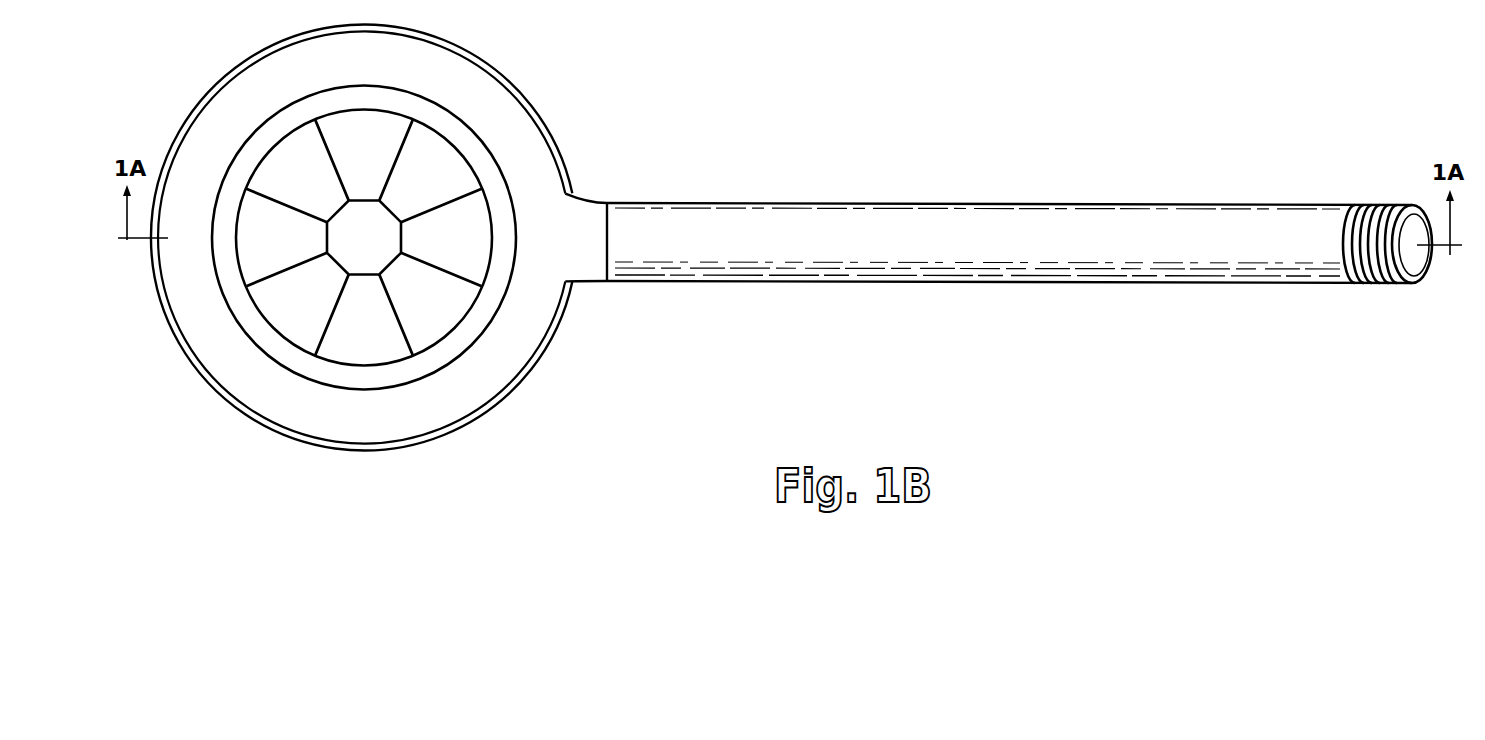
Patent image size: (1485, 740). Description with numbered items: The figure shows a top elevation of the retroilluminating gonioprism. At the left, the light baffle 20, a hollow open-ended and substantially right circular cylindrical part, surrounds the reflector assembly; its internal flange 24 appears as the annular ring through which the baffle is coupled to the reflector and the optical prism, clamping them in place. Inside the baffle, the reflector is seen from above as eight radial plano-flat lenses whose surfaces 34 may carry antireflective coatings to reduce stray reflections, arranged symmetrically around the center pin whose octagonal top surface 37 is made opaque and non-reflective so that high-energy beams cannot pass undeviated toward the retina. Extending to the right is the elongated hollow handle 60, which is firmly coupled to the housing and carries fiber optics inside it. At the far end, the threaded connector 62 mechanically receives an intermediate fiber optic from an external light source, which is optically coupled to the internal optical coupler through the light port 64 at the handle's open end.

The light baffle 20 is at (198, 115).
The internal flange 24 is at (218, 212).
The surfaces of lenses 34 is at (416, 187).
The top surface of pin 37 is at (352, 251).
The elongated hollow handle 60 is at (937, 251).
The connector 62 is at (1385, 203).
The light port 64 is at (1427, 282).